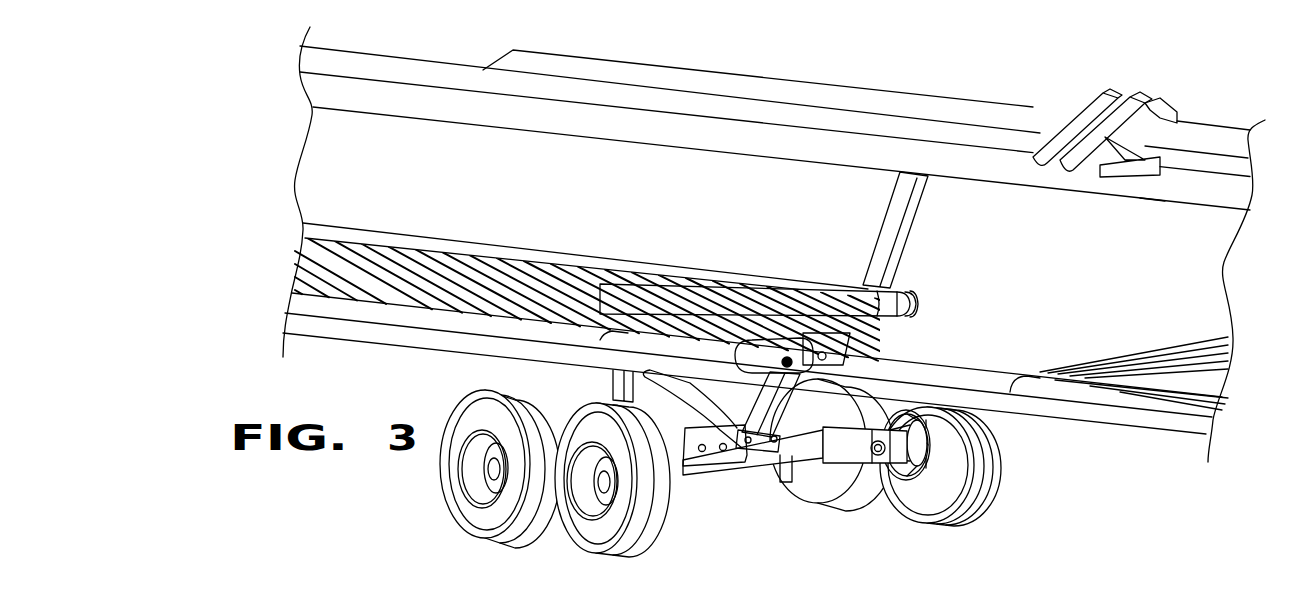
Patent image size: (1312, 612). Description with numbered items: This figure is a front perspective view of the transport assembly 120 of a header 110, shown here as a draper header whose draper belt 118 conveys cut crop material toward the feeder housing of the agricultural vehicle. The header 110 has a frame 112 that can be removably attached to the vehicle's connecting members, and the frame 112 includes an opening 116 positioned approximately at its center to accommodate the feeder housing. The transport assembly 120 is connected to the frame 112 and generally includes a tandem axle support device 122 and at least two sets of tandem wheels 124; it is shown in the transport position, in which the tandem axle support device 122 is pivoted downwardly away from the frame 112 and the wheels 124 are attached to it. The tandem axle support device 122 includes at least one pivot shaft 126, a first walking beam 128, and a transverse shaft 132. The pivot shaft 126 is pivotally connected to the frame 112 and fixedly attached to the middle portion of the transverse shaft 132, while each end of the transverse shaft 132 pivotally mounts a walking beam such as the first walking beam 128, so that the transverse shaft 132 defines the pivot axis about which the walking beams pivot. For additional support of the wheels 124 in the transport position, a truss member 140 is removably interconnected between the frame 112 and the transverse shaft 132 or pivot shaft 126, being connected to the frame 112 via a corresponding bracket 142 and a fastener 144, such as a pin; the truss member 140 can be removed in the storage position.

The header 110 is at (965, 86).
The frame 112 is at (1015, 112).
The opening 116 is at (1152, 212).
The draper belt 118 is at (322, 277).
The transport assembly 120 is at (524, 558).
The tandem axle support device 122 is at (748, 480).
The tandem wheels 124 is at (563, 497).
The pivot shaft 126 is at (669, 393).
The first walking beam 128 is at (880, 462).
The transverse shaft 132 is at (690, 476).
The truss member 140 is at (613, 393).
The bracket 142 is at (773, 353).
The fastener 144 is at (835, 350).